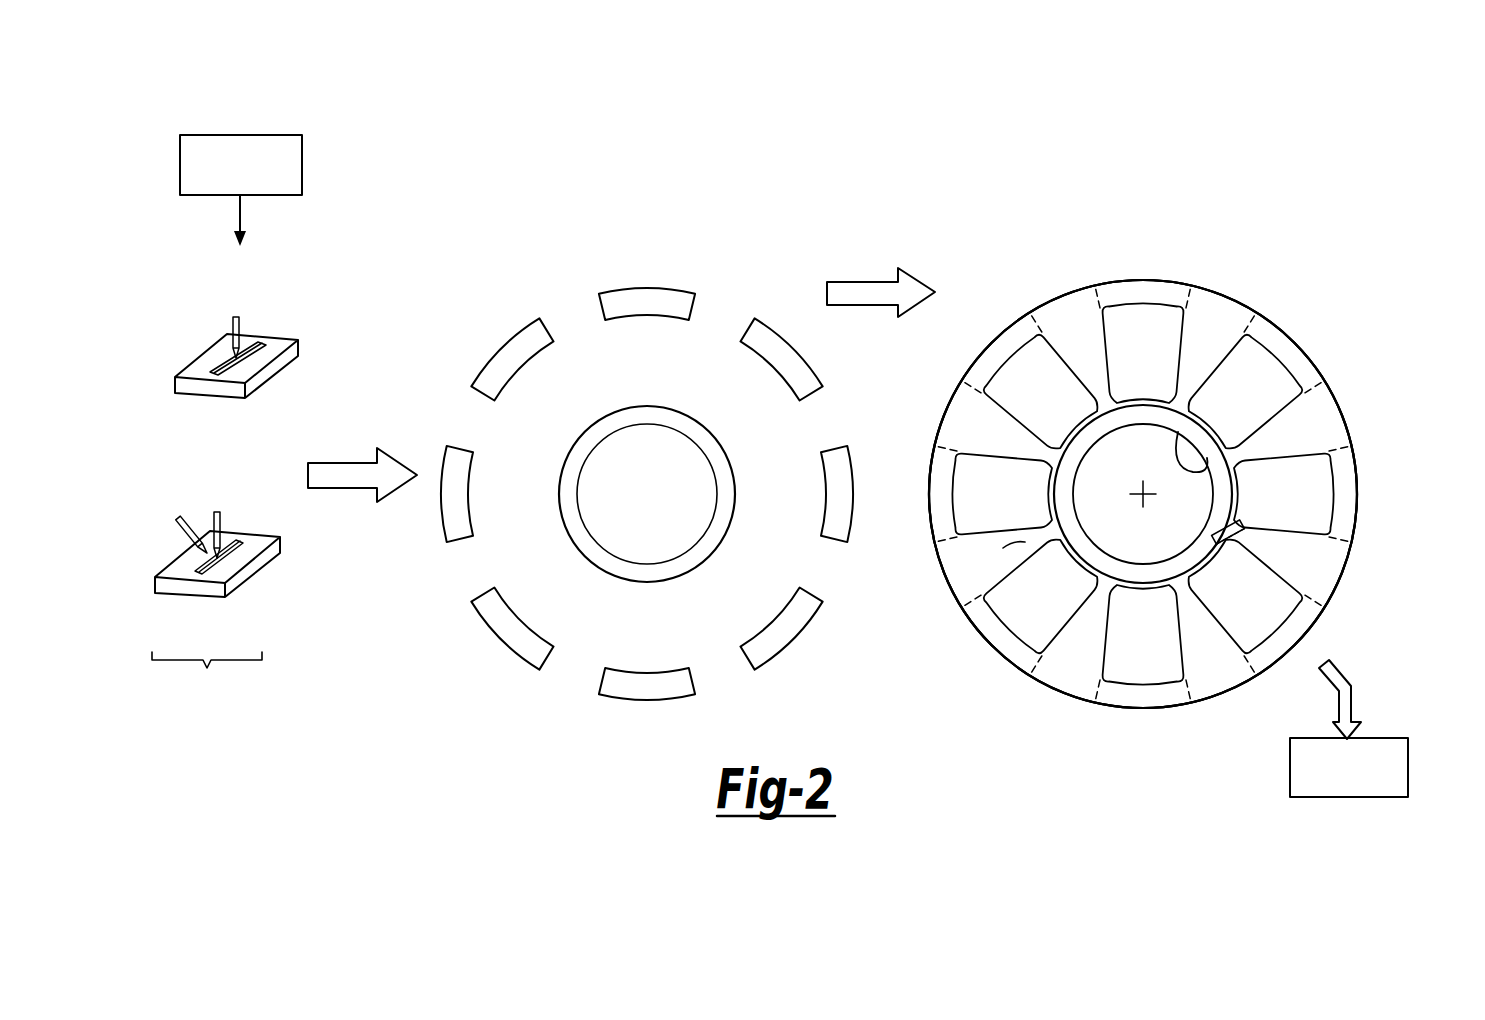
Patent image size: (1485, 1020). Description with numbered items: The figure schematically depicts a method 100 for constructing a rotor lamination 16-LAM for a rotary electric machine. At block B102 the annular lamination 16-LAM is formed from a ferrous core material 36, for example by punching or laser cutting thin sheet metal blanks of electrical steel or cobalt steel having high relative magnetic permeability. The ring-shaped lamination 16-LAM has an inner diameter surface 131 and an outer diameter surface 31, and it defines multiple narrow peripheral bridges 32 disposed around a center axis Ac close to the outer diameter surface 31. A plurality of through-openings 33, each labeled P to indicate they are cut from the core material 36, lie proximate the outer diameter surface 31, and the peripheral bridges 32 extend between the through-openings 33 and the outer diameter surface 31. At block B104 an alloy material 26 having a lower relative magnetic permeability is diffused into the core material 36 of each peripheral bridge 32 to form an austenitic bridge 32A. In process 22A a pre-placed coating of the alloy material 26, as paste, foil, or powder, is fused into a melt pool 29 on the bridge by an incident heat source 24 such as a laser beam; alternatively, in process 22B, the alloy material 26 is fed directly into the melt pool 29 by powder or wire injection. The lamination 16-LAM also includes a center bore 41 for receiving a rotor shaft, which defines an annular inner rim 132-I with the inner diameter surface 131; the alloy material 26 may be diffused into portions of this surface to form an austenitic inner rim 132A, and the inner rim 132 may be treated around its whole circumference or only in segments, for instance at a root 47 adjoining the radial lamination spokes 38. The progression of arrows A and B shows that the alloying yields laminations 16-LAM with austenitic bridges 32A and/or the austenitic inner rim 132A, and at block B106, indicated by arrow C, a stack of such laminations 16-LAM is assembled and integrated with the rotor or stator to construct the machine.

The method 100 is at (968, 165).
The rotor lamination 16-LAM is at (1322, 253).
The block B102 is at (302, 163).
The block B104 is at (207, 680).
The block B106 is at (1290, 765).
The process 22A is at (542, 409).
The process 22B is at (282, 605).
The heat source 24 is at (232, 322).
The alloy material 26 is at (265, 342).
The melt pool 29 is at (254, 345).
The ferrous core material 36 is at (195, 372).
The peripheral bridge 32 is at (647, 288).
The austenitic bridge 32A is at (930, 352).
The inner rim 132 is at (681, 408).
The annular inner rim 132-I is at (1060, 475).
The austenitic inner rim 132A is at (1060, 528).
The outer diameter surface 31 is at (1133, 280).
The through-openings 33 is at (1117, 340).
The inner diameter surface 131 is at (1205, 462).
The radial lamination spokes 38 is at (1013, 548).
The center bore 41 is at (1128, 533).
The root 47 is at (1247, 538).
The arrow A is at (343, 462).
The arrow B is at (862, 272).
The arrow C is at (1357, 700).
The center axis Ac is at (1140, 500).
The through-opening label P is at (1142, 493).